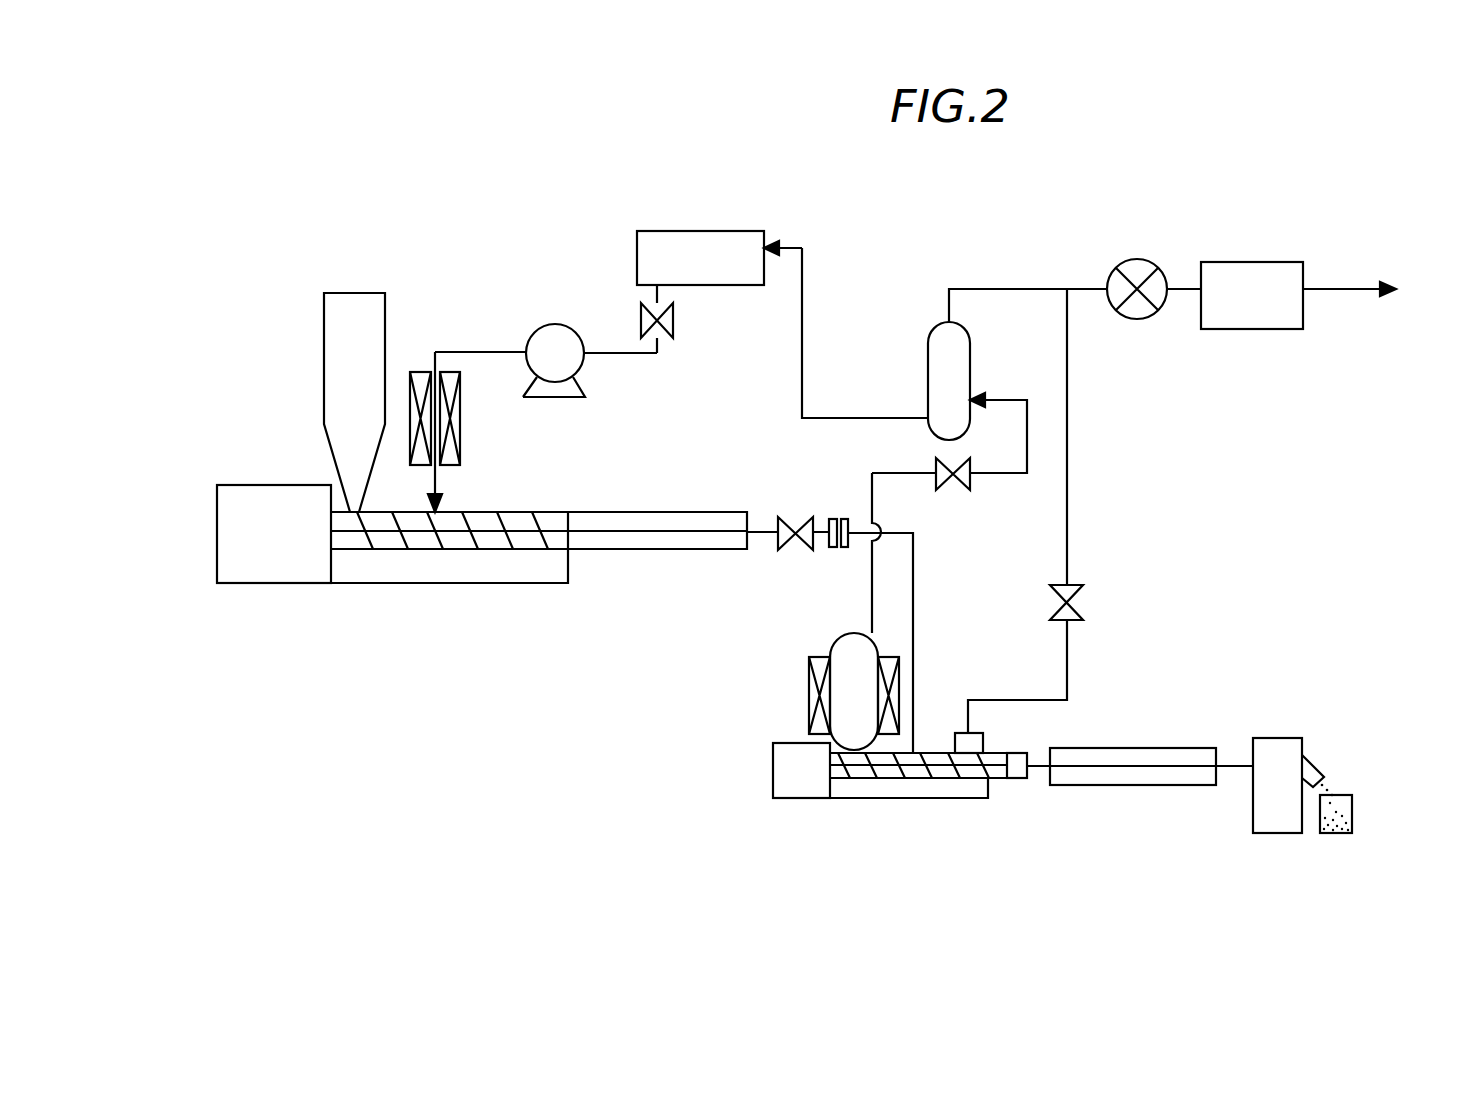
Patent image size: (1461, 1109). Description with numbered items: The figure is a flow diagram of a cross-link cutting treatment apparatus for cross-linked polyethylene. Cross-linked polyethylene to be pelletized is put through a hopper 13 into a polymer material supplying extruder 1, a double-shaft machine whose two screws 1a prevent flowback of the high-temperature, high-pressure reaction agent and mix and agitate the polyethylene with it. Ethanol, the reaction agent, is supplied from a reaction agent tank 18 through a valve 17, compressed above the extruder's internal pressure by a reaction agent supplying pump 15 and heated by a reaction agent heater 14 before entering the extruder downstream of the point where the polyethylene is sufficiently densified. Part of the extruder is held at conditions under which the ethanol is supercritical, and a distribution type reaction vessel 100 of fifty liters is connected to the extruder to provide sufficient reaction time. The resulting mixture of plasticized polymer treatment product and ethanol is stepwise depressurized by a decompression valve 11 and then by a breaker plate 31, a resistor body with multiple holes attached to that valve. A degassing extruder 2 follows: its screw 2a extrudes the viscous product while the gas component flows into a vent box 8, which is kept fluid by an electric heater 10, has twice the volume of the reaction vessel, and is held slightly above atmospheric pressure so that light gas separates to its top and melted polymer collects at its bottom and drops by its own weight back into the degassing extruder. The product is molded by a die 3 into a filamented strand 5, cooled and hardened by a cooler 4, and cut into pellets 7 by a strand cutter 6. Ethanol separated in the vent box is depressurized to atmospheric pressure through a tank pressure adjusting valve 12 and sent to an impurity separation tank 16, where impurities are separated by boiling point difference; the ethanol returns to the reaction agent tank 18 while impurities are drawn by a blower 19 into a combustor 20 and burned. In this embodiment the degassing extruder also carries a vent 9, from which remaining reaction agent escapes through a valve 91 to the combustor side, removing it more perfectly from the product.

The polymer material supplying extruder 1 is at (375, 570).
The screws 1a is at (503, 540).
The degassing extruder 2 is at (812, 782).
The screw 2a is at (897, 773).
The die 3 is at (1017, 778).
The cooler 4 is at (1099, 785).
The strand 5 is at (1230, 766).
The strand cutter 6 is at (1277, 738).
The pellets 7 is at (1333, 788).
The vent box 8 is at (828, 647).
The vent 9 is at (965, 733).
The heater 10 is at (808, 707).
The decompression valve 11 is at (795, 550).
The tank pressure adjusting valve 12 is at (955, 490).
The hopper 13 is at (324, 375).
The reaction agent heater 14 is at (460, 432).
The reaction agent supplying pump 15 is at (540, 328).
The impurity separation tank 16 is at (928, 345).
The valve 17 is at (660, 320).
The reaction agent tank 18 is at (637, 243).
The blower 19 is at (1143, 318).
The combustor 20 is at (1256, 329).
The breaker plate 31 is at (833, 519).
The valve 91 is at (1083, 600).
The distribution type reaction vessel 100 is at (667, 512).